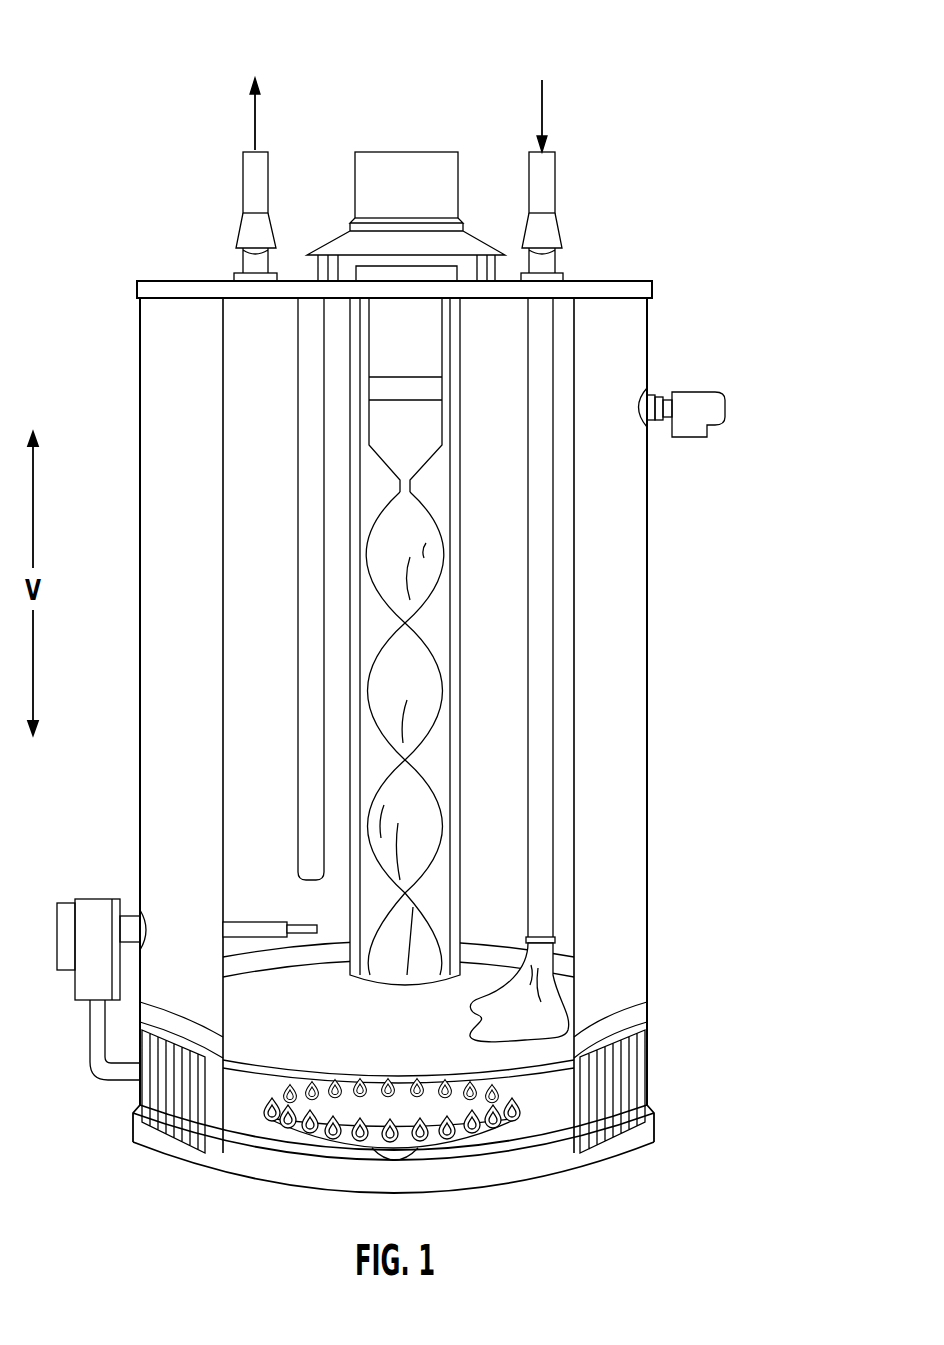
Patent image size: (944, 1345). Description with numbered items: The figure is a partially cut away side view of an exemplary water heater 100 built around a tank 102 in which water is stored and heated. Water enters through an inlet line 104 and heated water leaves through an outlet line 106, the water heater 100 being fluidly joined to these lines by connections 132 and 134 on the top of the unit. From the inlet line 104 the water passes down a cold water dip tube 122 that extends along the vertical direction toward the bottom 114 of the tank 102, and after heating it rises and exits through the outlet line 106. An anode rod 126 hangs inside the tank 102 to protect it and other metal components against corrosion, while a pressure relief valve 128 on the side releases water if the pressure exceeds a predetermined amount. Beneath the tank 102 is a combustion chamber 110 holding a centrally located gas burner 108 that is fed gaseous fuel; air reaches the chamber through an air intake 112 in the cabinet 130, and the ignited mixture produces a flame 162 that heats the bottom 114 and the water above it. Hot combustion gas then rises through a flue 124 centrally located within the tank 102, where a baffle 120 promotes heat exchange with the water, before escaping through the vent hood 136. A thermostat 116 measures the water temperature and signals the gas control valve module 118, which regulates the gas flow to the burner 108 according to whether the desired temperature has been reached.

The water heater 100 is at (140, 48).
The tank 102 is at (507, 343).
The inlet line 104 is at (550, 180).
The outlet line 106 is at (252, 187).
The gas burner 108 is at (440, 1150).
The combustion chamber 110 is at (561, 1138).
The air intake 112 is at (157, 1095).
The bottom 114 is at (414, 1046).
The thermostat 116 is at (305, 927).
The gas control valve module 118 is at (95, 897).
The baffle 120 is at (423, 555).
The cold water dip tube 122 is at (540, 688).
The flue 124 is at (462, 470).
The anode rod 126 is at (312, 513).
The pressure relief valve 128 is at (703, 397).
The cabinet 130 is at (637, 833).
The connection 132 is at (235, 278).
The connection 134 is at (560, 280).
The vent hood 136 is at (409, 165).
The flame 162 is at (332, 1127).